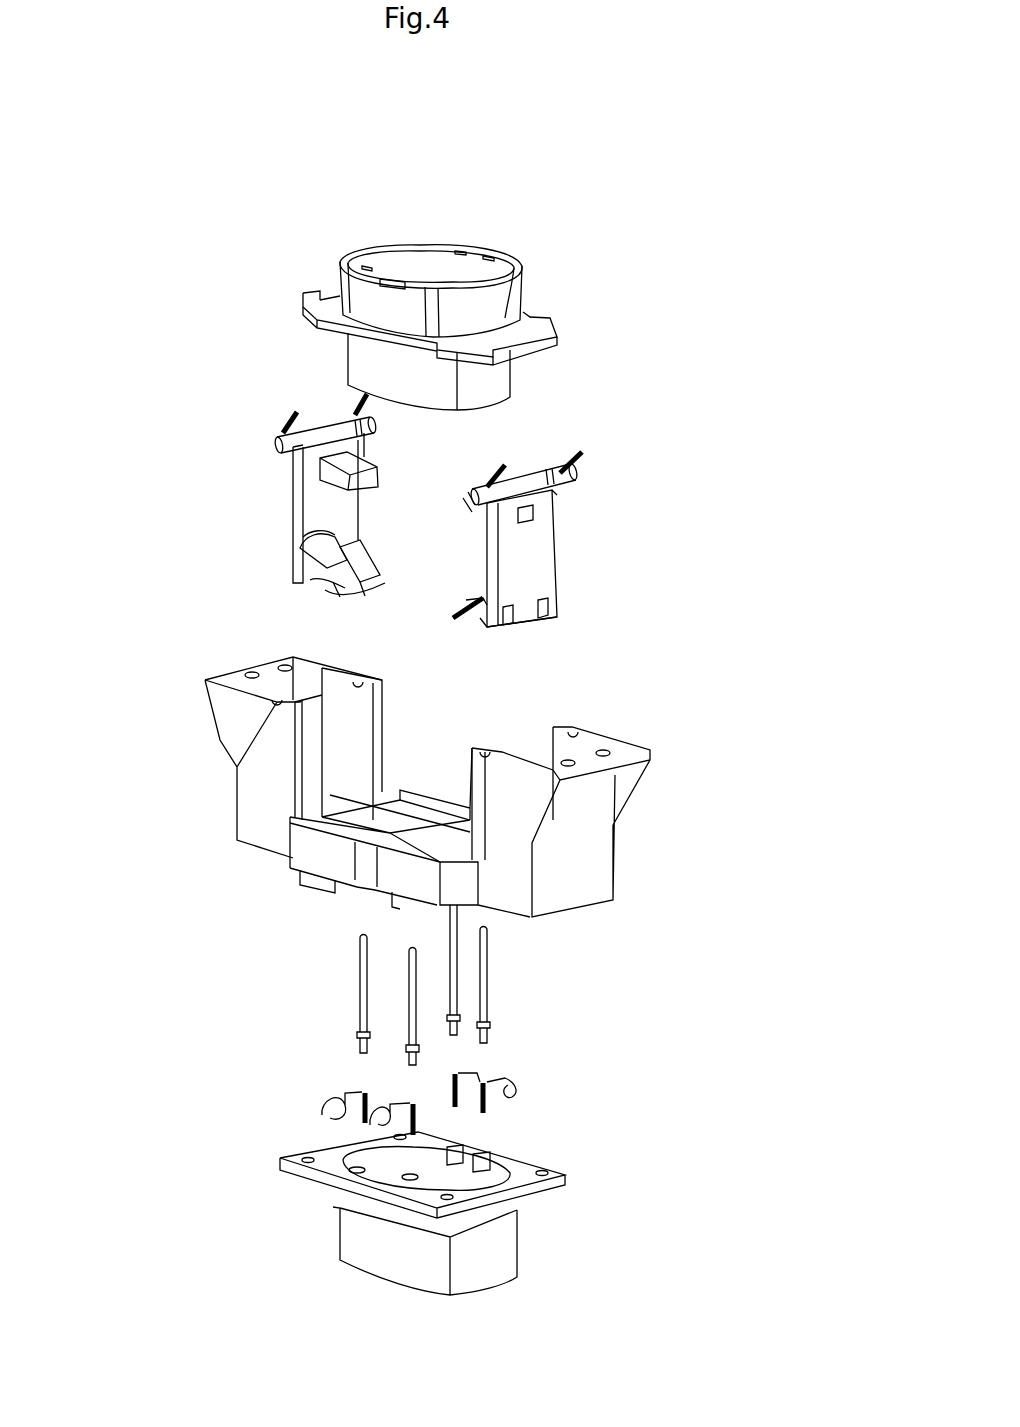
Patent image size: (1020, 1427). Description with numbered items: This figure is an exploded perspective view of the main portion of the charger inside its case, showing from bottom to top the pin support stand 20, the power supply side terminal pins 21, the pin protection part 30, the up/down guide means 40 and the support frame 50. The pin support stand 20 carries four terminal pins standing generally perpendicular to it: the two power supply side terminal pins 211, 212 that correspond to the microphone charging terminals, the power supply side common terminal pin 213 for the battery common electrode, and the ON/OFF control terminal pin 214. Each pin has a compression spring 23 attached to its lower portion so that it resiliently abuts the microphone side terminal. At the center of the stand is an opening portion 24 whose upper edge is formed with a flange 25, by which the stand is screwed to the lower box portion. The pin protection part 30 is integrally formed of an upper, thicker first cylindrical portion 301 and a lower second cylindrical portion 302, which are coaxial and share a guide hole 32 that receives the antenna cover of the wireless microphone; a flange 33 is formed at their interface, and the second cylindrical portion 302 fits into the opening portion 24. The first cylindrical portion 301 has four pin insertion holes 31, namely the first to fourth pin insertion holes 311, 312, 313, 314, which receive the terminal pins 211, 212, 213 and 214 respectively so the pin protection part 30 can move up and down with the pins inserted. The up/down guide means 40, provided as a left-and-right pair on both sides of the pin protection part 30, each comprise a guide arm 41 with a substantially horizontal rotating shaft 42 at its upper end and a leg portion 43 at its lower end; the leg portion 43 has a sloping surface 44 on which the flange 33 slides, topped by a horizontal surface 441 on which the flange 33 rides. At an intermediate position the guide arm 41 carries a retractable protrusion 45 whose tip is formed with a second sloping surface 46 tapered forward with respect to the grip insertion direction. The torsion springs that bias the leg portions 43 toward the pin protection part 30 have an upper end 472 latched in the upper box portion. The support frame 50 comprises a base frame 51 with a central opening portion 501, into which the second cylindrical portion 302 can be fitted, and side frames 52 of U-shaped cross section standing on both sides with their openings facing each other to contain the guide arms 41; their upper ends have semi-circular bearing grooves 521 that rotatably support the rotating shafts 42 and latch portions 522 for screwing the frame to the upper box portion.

The pin support stand 20 is at (437, 1184).
The power supply side terminal pin 21 is at (424, 985).
The power supply side terminal pin 211 is at (360, 955).
The power supply side terminal pin 212 is at (408, 1010).
The power supply side common terminal pin 213 is at (458, 967).
The ON/OFF control terminal pin 214 is at (488, 1002).
The compression spring 23 is at (370, 1132).
The opening portion 24 is at (488, 1173).
The flange 25 is at (313, 1180).
The pin protection part 30 is at (443, 267).
The pin insertion hole 31 is at (413, 207).
The first pin insertion hole 311 is at (362, 268).
The second pin insertion hole 312 is at (413, 280).
The third pin insertion hole 313 is at (460, 252).
The fourth pin insertion hole 314 is at (488, 258).
The guide hole 32 is at (422, 260).
The flange 33 is at (327, 297).
The first cylindrical portion 301 is at (510, 290).
The second cylindrical portion 302 is at (510, 378).
The up/down guide means 40 is at (439, 516).
The guide arm 41 is at (215, 476).
The rotating shaft 42 is at (280, 443).
The leg portion 43 is at (315, 578).
The sloping surface 44 is at (335, 597).
The horizontal surface 441 is at (310, 540).
The protrusion 45 is at (470, 507).
The sloping surface 46 is at (373, 470).
The upper end of torsion spring 472 is at (283, 420).
The support frame 50 is at (463, 774).
The base frame 51 is at (303, 860).
The opening portion 501 is at (427, 845).
The side frame 52 is at (463, 768).
The bearing groove 521 is at (275, 700).
The latch portion 522 is at (260, 665).